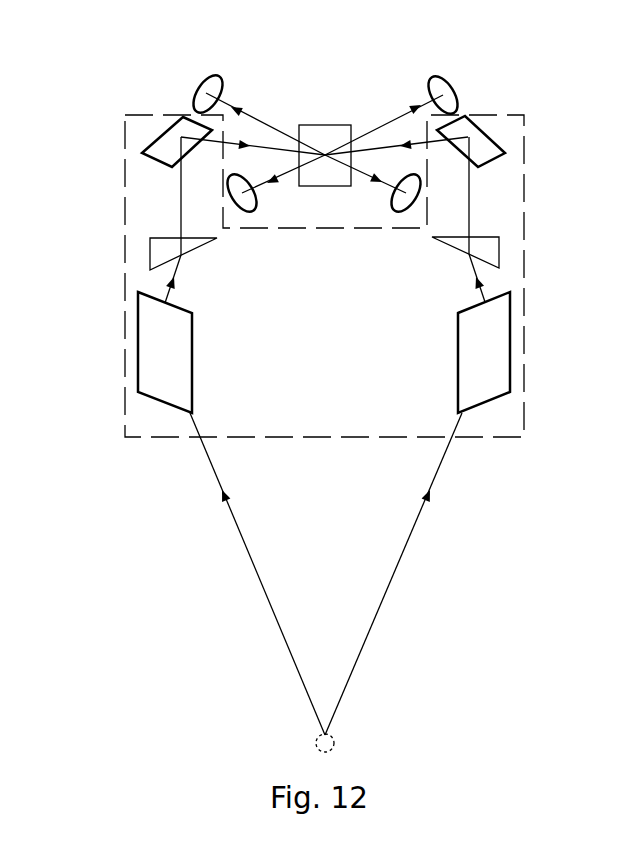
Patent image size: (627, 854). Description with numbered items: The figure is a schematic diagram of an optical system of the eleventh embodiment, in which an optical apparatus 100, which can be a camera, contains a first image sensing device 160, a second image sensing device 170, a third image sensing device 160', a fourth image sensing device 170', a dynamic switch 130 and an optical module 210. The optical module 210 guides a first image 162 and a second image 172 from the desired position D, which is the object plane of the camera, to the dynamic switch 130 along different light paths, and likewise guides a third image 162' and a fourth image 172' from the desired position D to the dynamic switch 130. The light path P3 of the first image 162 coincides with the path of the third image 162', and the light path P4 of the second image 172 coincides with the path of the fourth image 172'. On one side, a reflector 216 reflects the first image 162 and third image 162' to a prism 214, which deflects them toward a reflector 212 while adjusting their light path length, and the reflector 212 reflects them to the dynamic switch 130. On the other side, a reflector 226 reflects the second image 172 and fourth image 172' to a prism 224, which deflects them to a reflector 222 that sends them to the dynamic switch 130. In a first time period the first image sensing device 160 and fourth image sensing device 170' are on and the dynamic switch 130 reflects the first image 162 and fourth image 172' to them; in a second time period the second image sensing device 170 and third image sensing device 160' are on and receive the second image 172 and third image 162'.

The optical apparatus 100 is at (88, 65).
The dynamic switch 130 is at (320, 125).
The first image sensing device 160 is at (210, 77).
The first image 162 is at (232, 390).
The third image sensing device 160' is at (252, 216).
The third image 162' is at (283, 192).
The second image sensing device 170 is at (443, 78).
The second image 172 is at (416, 390).
The fourth image sensing device 170' is at (397, 216).
The fourth image 172' is at (365, 192).
The optical module 210 is at (525, 273).
The reflector 212 is at (490, 153).
The prism 214 is at (458, 245).
The reflector 216 is at (470, 332).
The reflector 222 is at (163, 152).
The prism 224 is at (193, 250).
The reflector 226 is at (180, 333).
The light path P4 is at (276, 642).
The light path P3 is at (374, 642).
The desired position D is at (334, 745).